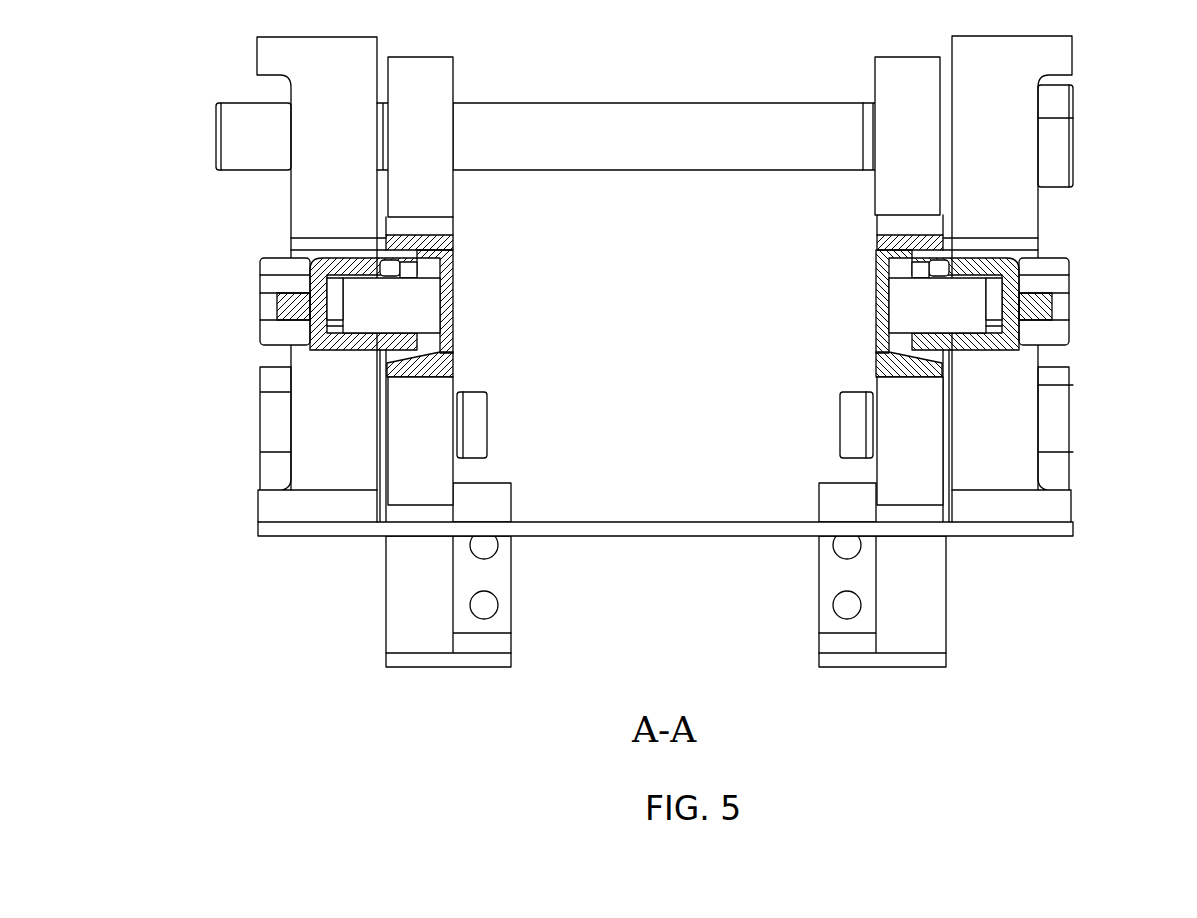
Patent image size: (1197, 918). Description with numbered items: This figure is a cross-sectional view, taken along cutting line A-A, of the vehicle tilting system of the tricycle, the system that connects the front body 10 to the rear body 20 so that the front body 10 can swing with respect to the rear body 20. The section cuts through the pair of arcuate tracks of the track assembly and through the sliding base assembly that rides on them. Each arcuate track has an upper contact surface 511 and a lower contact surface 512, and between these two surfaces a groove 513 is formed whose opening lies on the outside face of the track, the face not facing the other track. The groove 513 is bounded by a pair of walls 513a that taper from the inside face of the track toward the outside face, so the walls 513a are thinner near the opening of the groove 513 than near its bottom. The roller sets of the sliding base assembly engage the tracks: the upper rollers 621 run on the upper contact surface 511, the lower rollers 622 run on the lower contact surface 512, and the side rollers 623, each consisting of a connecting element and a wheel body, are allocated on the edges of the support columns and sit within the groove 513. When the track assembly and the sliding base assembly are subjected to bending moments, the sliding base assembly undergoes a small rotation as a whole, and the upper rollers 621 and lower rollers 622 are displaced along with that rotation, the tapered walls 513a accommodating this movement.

The front body 10 is at (223, 243).
The rear body 20 is at (1085, 248).
The upper contact surface 511 is at (890, 232).
The lower contact surface 512 is at (880, 370).
The groove 513 is at (897, 267).
The walls 513a is at (907, 255).
The upper rollers 621 is at (890, 177).
The lower rollers 622 is at (887, 432).
The side rollers 623 is at (900, 306).